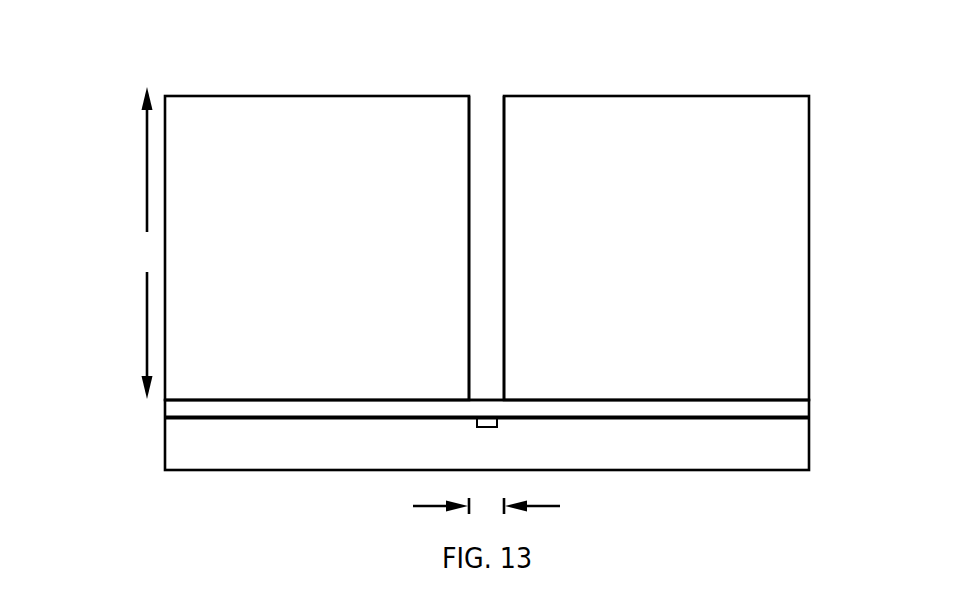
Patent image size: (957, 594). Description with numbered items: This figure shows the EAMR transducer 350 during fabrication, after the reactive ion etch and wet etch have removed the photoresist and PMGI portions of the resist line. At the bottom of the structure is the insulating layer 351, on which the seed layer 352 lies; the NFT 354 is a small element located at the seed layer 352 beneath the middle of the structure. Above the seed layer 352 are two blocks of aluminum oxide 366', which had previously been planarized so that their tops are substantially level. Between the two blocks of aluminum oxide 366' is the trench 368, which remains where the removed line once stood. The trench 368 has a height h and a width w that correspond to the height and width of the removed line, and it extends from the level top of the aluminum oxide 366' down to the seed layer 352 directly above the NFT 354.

The EAMR transducer 350 is at (510, 36).
The insulating layer 351 is at (345, 471).
The seed layer 352 is at (165, 408).
The NFT 354 is at (492, 427).
The aluminum oxide 366' is at (317, 214).
The trench 368 is at (484, 82).